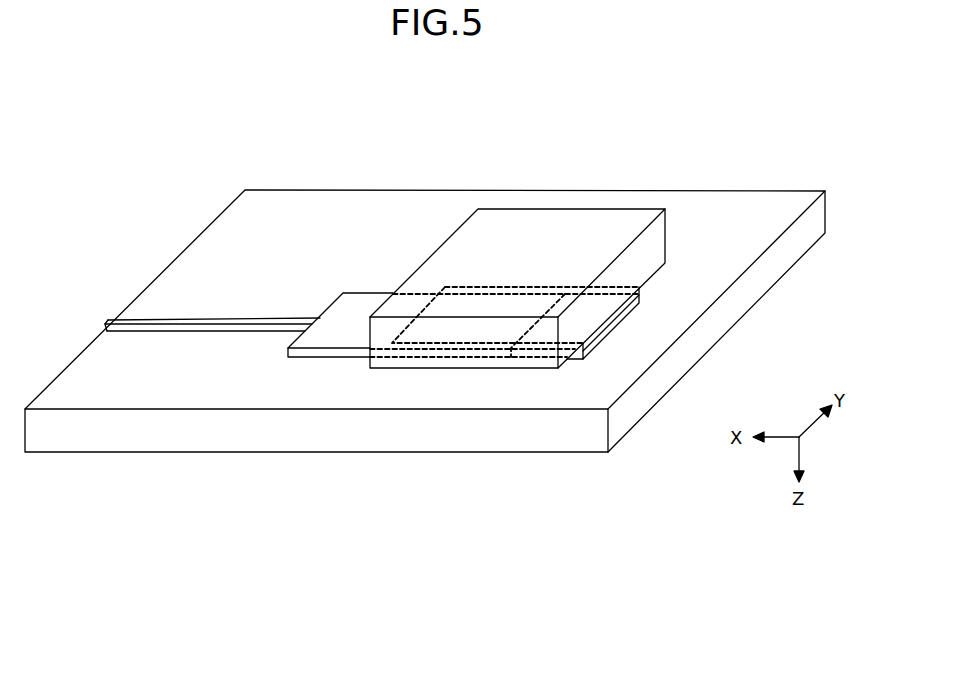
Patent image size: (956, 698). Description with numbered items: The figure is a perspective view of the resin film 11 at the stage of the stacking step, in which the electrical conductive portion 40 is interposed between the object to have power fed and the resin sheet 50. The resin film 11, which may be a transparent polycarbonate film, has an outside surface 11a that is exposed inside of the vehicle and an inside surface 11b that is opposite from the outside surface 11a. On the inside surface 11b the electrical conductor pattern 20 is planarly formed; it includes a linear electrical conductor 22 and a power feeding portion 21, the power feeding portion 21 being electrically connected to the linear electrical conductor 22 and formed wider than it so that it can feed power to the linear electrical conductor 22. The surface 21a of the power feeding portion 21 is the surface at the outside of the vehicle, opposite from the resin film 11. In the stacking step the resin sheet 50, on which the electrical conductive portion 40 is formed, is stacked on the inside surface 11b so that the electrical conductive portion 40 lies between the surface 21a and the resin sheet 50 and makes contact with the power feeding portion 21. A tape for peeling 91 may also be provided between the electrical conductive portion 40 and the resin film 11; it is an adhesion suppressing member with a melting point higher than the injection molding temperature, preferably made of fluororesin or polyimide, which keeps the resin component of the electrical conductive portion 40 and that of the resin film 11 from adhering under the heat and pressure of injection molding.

The resin film 11 is at (425, 319).
The outside surface 11a is at (528, 452).
The inside surface 11b is at (622, 373).
The electrical conductor pattern 20 is at (378, 131).
The power feeding portion 21 is at (363, 303).
The surface of the power feeding portion 21a is at (375, 297).
The linear electrical conductor 22 is at (292, 318).
The electrical conductive portion 40 is at (637, 311).
The resin sheet 50 is at (571, 218).
The tape for peeling 91 is at (622, 324).